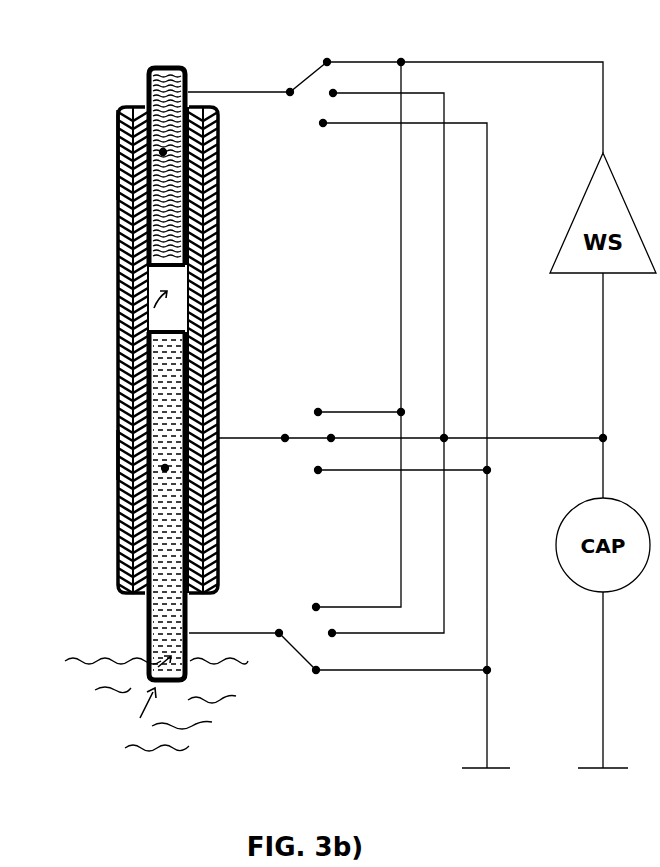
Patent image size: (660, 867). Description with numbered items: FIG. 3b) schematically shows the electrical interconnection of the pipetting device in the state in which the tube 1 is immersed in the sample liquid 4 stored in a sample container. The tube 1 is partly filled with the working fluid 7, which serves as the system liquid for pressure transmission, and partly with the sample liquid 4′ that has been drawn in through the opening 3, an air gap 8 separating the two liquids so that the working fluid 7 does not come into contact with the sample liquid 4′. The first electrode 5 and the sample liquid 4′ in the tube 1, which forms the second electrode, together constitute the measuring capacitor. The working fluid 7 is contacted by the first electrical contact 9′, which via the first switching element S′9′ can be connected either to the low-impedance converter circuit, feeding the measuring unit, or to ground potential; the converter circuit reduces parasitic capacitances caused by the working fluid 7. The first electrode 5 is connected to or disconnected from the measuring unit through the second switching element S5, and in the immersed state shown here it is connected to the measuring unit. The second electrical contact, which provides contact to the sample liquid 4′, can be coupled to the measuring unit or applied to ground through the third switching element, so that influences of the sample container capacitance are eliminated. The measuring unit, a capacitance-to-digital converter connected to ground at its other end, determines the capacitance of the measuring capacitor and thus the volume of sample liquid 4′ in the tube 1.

The tube 1 is at (118, 262).
The working fluid 7 is at (118, 157).
The air gap 8 is at (118, 310).
The first electrode 5 is at (118, 388).
The sample liquid 4′ is at (118, 452).
The first electrical contact 9′ is at (145, 85).
The sample liquid 4 is at (110, 746).
The opening 3 is at (140, 720).
The first switching element S′9′ is at (395, 408).
The second switching element S5 is at (412, 439).